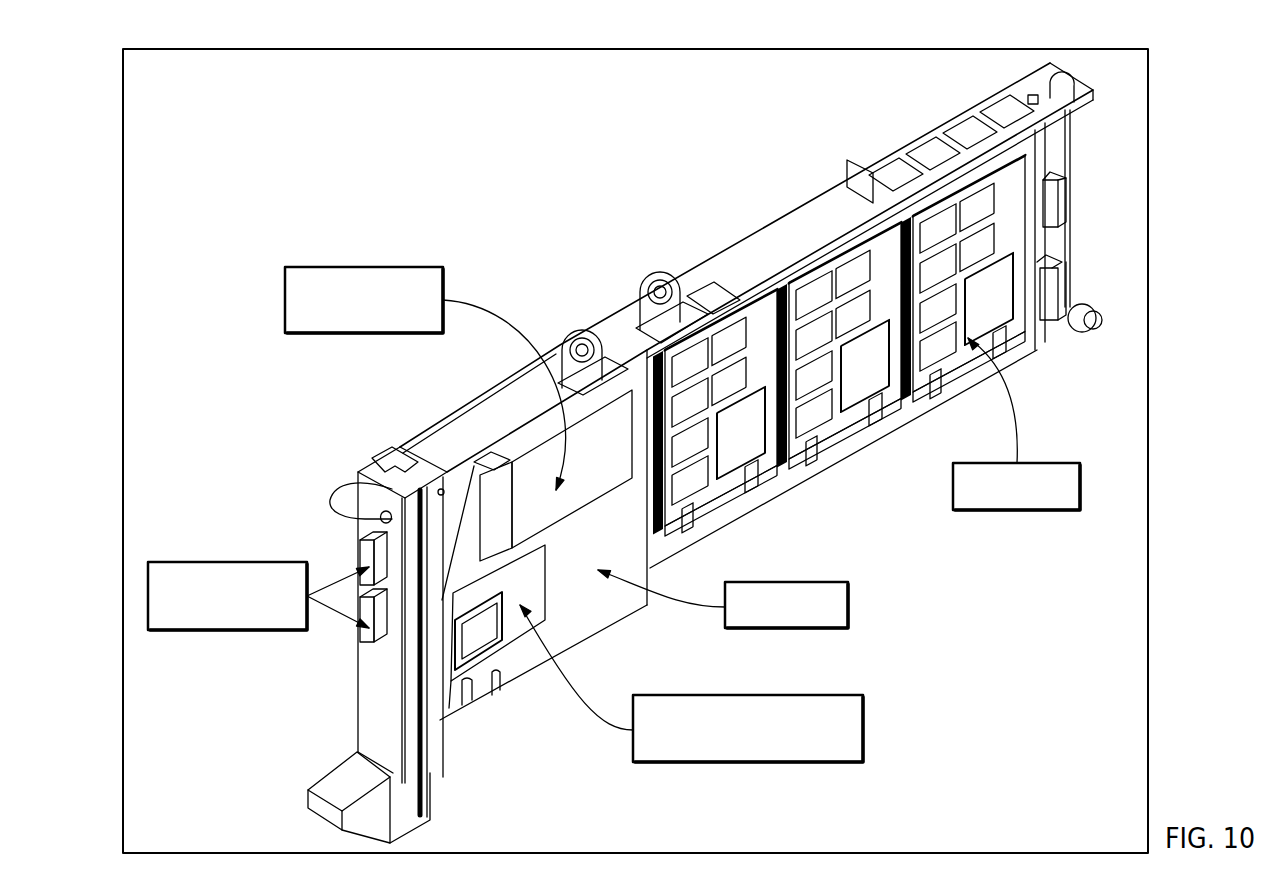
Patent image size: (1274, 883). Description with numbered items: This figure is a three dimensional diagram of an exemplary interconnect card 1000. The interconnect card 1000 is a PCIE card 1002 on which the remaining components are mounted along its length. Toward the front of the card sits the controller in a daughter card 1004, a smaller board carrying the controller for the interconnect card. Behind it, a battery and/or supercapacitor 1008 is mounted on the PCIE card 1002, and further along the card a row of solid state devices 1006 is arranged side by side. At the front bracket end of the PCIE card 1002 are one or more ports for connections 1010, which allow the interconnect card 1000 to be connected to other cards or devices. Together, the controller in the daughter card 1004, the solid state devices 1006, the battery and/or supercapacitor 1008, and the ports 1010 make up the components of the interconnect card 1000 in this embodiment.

The interconnect card 1000 is at (172, 48).
The PCIE card 1002 is at (850, 607).
The controller in daughter card 1004 is at (863, 730).
The solid state devices 1006 is at (1020, 512).
The batteries and/or supercapacitors 1008 is at (362, 265).
The ports 1010 is at (227, 560).